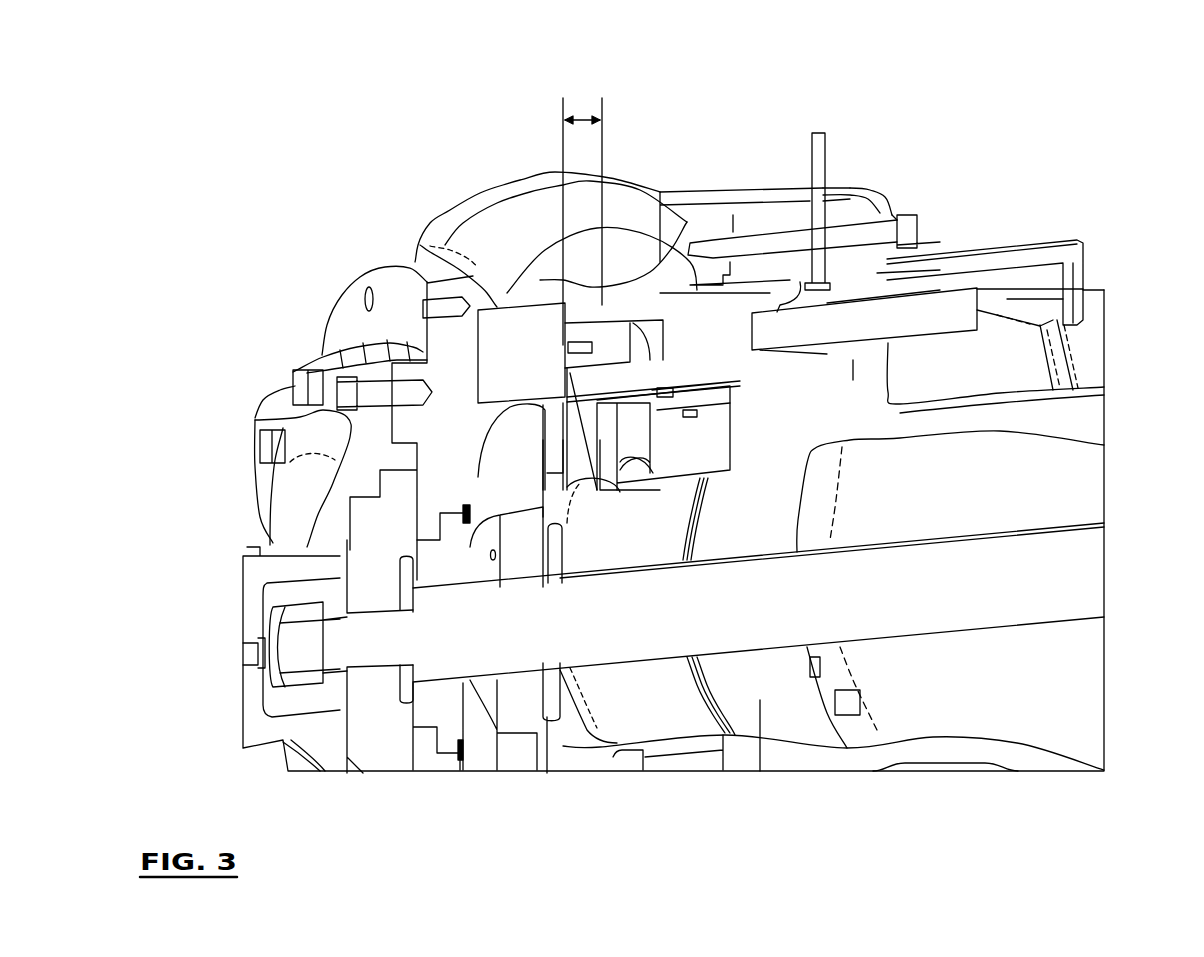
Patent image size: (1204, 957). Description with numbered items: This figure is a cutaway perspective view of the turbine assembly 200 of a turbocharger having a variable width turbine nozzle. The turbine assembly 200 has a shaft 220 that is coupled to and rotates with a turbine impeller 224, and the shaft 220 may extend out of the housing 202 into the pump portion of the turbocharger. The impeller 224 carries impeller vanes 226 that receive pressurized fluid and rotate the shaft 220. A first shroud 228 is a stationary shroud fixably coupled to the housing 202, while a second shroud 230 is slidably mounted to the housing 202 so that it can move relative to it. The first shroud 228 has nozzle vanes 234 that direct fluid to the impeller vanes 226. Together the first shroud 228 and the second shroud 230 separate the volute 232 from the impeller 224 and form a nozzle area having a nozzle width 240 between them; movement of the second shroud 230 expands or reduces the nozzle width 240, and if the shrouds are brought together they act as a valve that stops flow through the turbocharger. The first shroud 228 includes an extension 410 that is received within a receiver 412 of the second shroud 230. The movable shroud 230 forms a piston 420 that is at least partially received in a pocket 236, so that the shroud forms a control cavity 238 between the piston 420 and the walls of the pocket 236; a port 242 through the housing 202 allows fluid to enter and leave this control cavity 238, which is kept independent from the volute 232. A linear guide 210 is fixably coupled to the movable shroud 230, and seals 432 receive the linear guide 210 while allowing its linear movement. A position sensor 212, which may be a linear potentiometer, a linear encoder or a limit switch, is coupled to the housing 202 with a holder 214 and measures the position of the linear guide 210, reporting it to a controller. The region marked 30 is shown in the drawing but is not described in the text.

The turbine assembly 200 is at (316, 93).
The housing 202 is at (450, 206).
The volute 232 is at (628, 248).
The nozzle vanes 234 is at (565, 325).
The first shroud 228 is at (460, 256).
The nozzle width 240 is at (583, 113).
The receiver 412 is at (650, 370).
The second shroud 230 is at (740, 300).
The pocket 236 is at (767, 285).
The port 242 is at (820, 138).
The seals 432 is at (937, 262).
The control cavity 238 is at (870, 330).
The holder 214 is at (1043, 247).
The position sensor 212 is at (1052, 302).
The linear guide 210 is at (930, 318).
The piston 420 is at (768, 398).
The shaft 220 is at (1073, 582).
The housing 30 is at (1073, 692).
The turbine impeller 224 is at (512, 715).
The impeller vanes 226 is at (578, 453).
The extension 410 is at (618, 350).